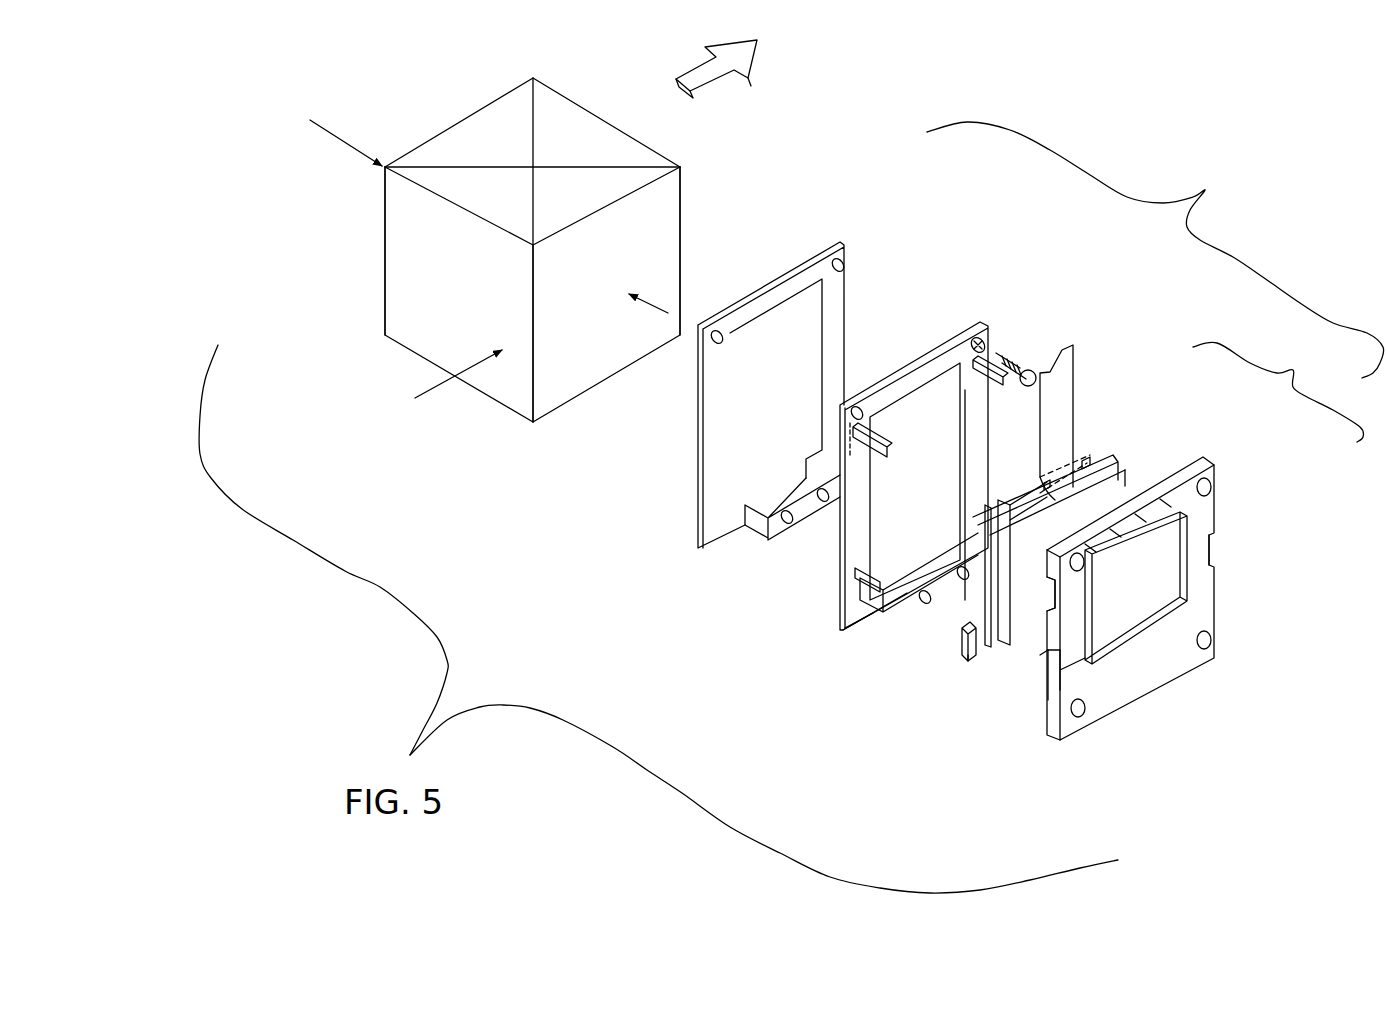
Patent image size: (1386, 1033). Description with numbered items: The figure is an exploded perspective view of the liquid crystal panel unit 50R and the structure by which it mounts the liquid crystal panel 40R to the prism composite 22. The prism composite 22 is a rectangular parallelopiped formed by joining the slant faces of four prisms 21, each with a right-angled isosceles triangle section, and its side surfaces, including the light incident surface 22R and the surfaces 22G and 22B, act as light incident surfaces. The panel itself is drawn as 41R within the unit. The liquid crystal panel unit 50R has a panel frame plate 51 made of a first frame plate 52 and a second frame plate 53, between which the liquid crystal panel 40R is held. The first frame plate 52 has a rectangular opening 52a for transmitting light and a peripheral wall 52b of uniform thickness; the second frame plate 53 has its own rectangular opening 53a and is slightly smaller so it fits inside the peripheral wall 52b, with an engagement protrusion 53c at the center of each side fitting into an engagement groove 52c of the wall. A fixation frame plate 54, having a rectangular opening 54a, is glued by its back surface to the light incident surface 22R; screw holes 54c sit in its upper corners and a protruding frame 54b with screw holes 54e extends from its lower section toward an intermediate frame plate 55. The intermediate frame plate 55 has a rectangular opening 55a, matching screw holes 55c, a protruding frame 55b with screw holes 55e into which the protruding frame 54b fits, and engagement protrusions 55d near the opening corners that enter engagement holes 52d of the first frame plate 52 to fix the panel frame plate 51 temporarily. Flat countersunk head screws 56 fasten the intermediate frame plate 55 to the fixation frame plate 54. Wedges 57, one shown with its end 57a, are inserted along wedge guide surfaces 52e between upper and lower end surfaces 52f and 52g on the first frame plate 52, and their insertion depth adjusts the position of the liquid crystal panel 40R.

The prism 21 is at (511, 152).
The prism composite 22 is at (511, 268).
The light incident surface 22R is at (660, 236).
The green light incident surface 22G is at (407, 290).
The blue light incident surface 22B is at (440, 258).
The liquid crystal panel 40R is at (1126, 463).
The liquid crystal panel 41R is at (1076, 411).
The liquid crystal panel unit 50R is at (1226, 176).
The panel frame plate 51 is at (1278, 392).
The first frame plate 52 is at (1160, 626).
The rectangular opening 52a is at (1183, 586).
The peripheral wall 52b is at (1052, 737).
The engagement groove 52c is at (1214, 547).
The engagement hole 52d is at (1211, 488).
The wedge guide surface 52e is at (1088, 689).
The upper end surface 52f is at (1040, 660).
The lower end surface 52g is at (1048, 701).
The second frame plate 53 is at (1042, 533).
The rectangular opening 53a is at (984, 611).
The engagement protrusion 53c is at (975, 640).
The fixation frame plate 54 is at (777, 373).
The rectangular opening 54a is at (742, 475).
The protruding frame 54b is at (745, 490).
The screw hole 54c is at (845, 268).
The screw hole 54e is at (755, 540).
The intermediate frame plate 55 is at (913, 446).
The rectangular opening 55a is at (877, 530).
The protruding frame 55b is at (930, 575).
The screw hole 55c is at (984, 344).
The engagement protrusion 55d is at (880, 451).
The screw hole 55e is at (998, 505).
The flat countersunk head screw 56 is at (1023, 360).
The wedge 57 is at (965, 651).
The pin end 57a is at (968, 664).